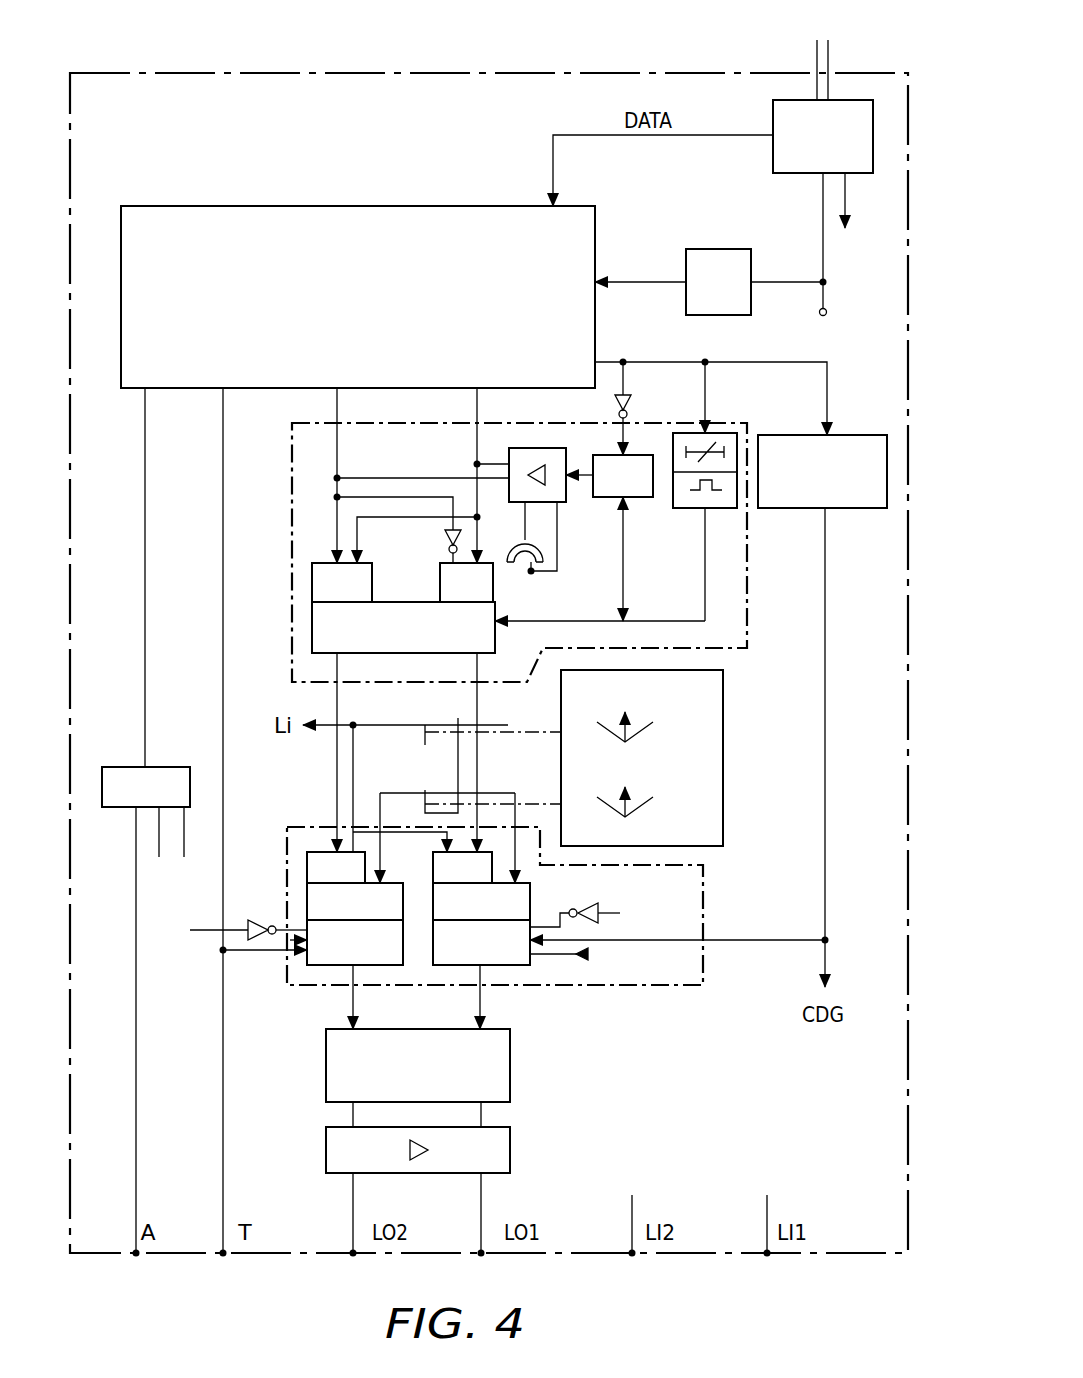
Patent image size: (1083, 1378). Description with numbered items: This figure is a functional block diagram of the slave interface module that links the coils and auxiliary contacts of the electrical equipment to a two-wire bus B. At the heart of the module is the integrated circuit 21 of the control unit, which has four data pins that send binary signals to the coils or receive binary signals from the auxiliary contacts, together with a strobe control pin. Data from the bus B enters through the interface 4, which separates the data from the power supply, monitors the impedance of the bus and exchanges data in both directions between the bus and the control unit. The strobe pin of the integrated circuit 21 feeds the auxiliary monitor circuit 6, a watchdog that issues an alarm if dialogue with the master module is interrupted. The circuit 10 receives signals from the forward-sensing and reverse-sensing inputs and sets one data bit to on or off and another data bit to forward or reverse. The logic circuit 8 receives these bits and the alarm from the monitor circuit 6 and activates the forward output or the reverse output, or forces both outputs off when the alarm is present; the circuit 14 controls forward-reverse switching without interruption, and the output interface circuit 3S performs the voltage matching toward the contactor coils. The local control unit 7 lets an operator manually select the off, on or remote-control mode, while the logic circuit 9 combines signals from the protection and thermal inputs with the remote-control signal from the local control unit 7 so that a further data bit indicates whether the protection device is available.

The integrated circuit 21 is at (319, 206).
The interface 4 is at (773, 155).
The bus B is at (836, 68).
The auxiliary monitor circuit 6 is at (862, 433).
The circuit 10 is at (747, 604).
The local control unit 7 is at (723, 760).
The logic circuit 8 is at (703, 968).
The logic circuit 9 is at (123, 767).
The circuit 14 is at (510, 1073).
The output interface circuit 3S is at (510, 1152).